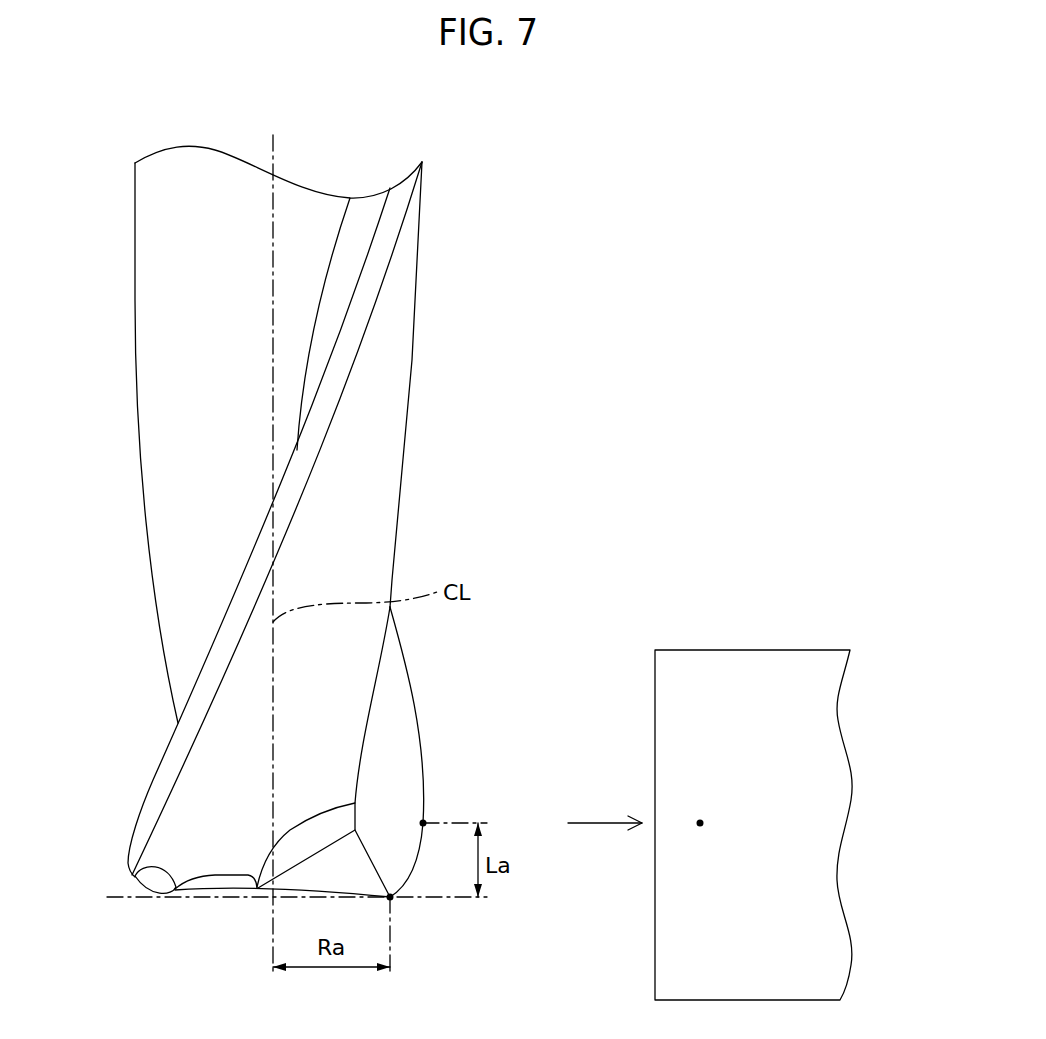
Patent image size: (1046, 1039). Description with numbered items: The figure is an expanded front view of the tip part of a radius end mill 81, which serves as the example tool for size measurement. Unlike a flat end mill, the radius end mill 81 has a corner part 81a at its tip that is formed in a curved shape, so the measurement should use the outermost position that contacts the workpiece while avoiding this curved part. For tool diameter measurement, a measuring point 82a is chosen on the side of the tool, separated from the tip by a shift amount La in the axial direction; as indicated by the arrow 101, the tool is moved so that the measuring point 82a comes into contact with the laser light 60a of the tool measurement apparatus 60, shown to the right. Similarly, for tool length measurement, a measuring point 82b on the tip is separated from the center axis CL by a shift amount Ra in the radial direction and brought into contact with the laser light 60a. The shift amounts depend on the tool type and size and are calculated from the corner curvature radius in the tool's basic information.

The radius end mill 81 is at (402, 277).
The corner part 81a is at (132, 875).
The measuring point 82a is at (423, 823).
The measuring point 82b is at (390, 897).
The tool measurement apparatus 60 is at (727, 650).
The laser light 60a is at (700, 823).
The arrow 101 is at (600, 822).